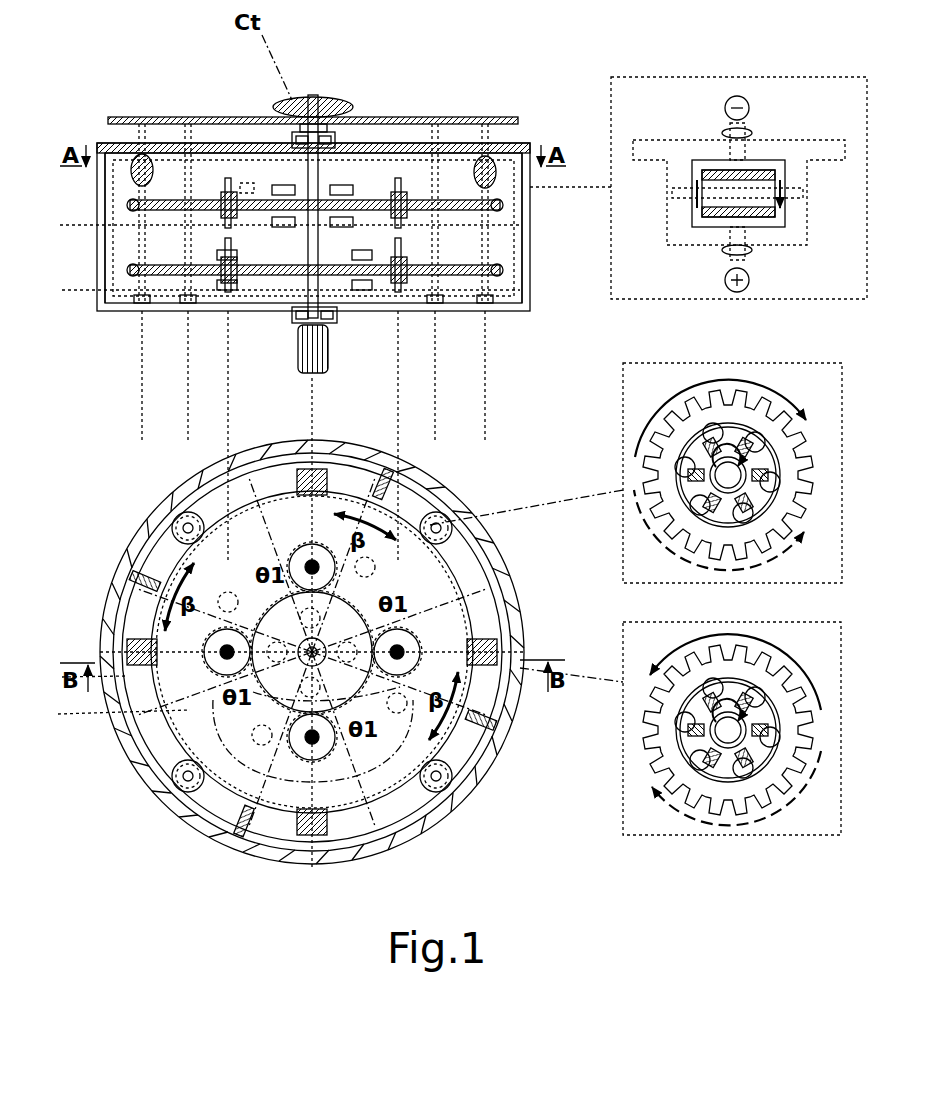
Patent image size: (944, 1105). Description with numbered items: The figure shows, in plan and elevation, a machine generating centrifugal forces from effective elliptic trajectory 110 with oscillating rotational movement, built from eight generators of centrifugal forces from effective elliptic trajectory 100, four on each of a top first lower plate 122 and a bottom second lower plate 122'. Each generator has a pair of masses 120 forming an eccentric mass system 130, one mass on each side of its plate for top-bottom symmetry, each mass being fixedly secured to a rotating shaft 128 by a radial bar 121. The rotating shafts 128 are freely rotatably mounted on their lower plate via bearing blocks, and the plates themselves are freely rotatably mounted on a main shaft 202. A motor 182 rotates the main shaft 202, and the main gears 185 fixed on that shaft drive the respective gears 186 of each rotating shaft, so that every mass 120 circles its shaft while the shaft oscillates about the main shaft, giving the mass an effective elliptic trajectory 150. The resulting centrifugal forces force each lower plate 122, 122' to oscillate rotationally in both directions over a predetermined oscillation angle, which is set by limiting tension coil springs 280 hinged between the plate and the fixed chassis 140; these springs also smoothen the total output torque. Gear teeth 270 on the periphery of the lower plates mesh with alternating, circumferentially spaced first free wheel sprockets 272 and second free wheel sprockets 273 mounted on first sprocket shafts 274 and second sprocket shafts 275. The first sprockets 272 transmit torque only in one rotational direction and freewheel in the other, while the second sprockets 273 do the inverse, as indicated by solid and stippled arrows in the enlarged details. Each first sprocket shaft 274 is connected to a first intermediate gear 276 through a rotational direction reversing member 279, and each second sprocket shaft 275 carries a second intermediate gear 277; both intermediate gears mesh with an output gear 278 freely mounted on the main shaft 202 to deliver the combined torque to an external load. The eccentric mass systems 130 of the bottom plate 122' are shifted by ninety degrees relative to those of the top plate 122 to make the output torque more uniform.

The generator of centrifugal forces from effective elliptic trajectory 100 is at (512, 207).
The machine generating centrifugal forces from effective elliptic trajectory 110 is at (168, 95).
The mass 120 is at (400, 293).
The radial bar 121 is at (248, 182).
The top first lower plate 122 is at (267, 469).
The bottom second lower plate 122' is at (267, 483).
The rotating shaft 128 is at (400, 218).
The eccentric mass system 130 is at (224, 292).
The fixed chassis 140 is at (527, 278).
The effective elliptic trajectory 150 is at (376, 845).
The motor 182 is at (330, 350).
The main gear 185 is at (305, 322).
The gear 186 is at (228, 296).
The main shaft 202 is at (340, 97).
The gear teeth 270 is at (150, 746).
The first free wheel sprocket 272 is at (126, 205).
The second free wheel sprocket 273 is at (183, 303).
The first sprocket shaft 274 is at (527, 312).
The second sprocket shaft 275 is at (442, 145).
The first intermediate gear 276 is at (125, 118).
The second intermediate gear 277 is at (190, 118).
The output gear 278 is at (276, 108).
The rotational direction reversing member 279 is at (118, 172).
The limiting tension coil spring 280 is at (236, 802).